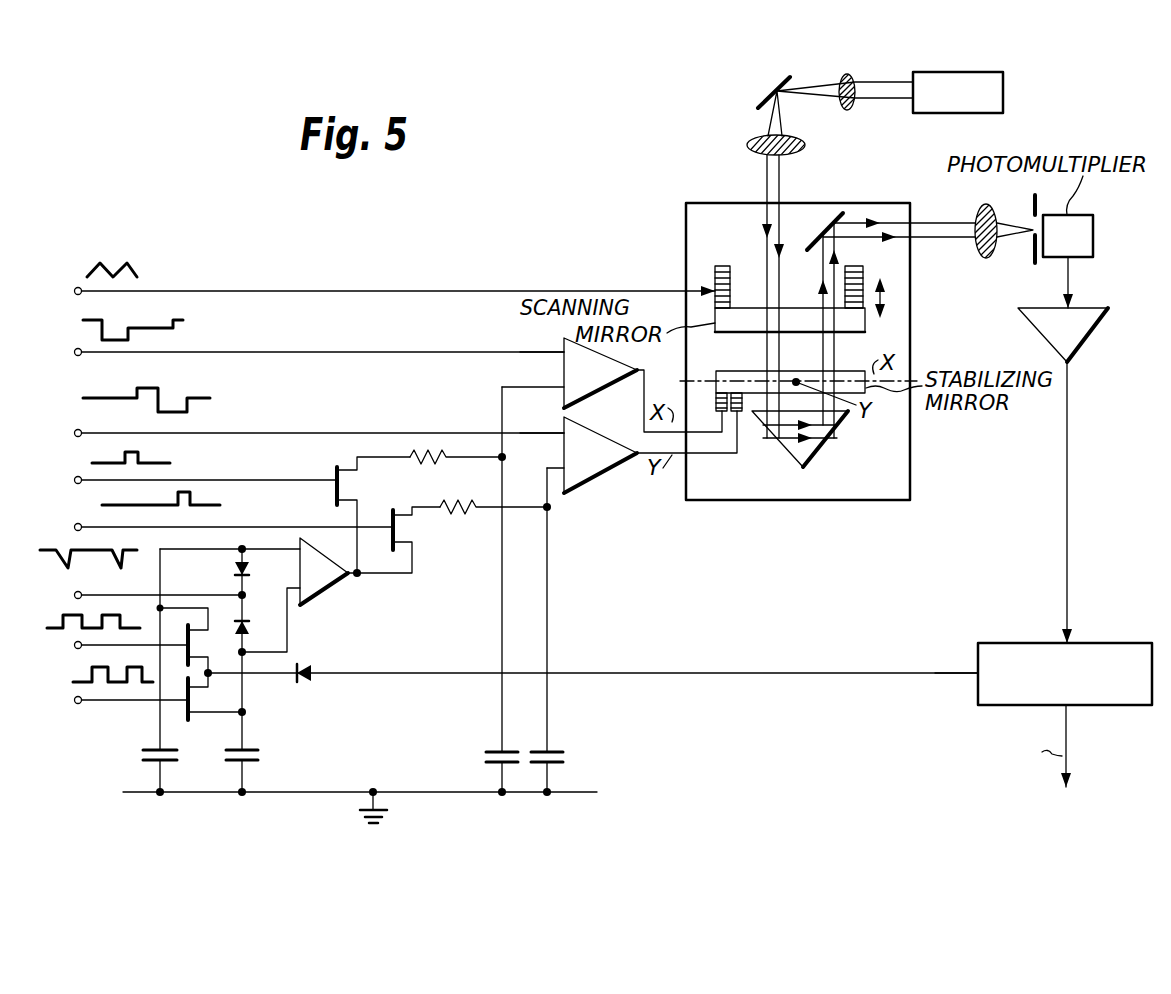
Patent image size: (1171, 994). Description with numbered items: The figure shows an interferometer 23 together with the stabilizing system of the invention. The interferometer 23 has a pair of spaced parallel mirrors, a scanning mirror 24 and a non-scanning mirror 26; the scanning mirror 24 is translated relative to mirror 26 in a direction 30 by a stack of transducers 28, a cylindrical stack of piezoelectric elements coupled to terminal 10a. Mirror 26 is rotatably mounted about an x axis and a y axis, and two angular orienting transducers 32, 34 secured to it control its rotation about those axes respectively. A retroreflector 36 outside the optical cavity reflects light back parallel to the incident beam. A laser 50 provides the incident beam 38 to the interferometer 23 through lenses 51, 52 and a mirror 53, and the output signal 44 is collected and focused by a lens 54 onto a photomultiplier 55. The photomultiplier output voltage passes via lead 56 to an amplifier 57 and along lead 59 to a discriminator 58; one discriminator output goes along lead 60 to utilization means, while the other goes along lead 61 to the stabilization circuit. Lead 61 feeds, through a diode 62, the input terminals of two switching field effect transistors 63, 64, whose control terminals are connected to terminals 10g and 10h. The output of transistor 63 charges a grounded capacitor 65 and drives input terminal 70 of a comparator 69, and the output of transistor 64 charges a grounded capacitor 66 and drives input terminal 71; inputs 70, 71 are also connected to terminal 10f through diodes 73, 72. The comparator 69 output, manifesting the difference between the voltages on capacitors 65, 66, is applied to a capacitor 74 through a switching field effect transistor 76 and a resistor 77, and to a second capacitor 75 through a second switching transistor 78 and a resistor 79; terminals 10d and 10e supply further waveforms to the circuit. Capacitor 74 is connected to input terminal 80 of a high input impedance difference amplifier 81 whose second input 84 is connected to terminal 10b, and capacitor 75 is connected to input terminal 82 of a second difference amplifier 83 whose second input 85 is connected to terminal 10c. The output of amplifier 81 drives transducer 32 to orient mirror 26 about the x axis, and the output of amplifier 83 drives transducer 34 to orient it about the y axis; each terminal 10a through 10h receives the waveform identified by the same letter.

The terminal 10a is at (74, 291).
The terminal 10b is at (74, 352).
The terminal 10c is at (74, 433).
The terminal 10d is at (74, 480).
The terminal 10e is at (74, 527).
The terminal 10f is at (74, 595).
The terminal 10g is at (74, 645).
The terminal 10h is at (74, 700).
The interferometer 23 is at (887, 500).
The scanning mirror 24 is at (860, 331).
The non-scanning mirror 26 is at (743, 371).
The stack of transducers 28 is at (722, 266).
The direction 30 is at (883, 298).
The angular orienting transducer 32 is at (716, 400).
The angular orienting transducer 34 is at (739, 414).
The retroreflector 36 is at (830, 440).
The incident beam 38 is at (788, 185).
The output signal 44 is at (930, 221).
The laser 50 is at (968, 72).
The lens 51 is at (850, 75).
The lens 52 is at (805, 146).
The mirror 53 is at (779, 77).
The lens 54 is at (982, 250).
The photomultiplier 55 is at (1093, 232).
The lead 56 is at (1070, 280).
The amplifier 57 is at (1090, 333).
The discriminator 58 is at (1088, 643).
The lead 59 is at (1068, 522).
The lead 60 is at (1068, 758).
The output lead 61 is at (937, 674).
The diode 62 is at (300, 680).
The switching field effect transistor 63 is at (200, 644).
The switching field effect transistor 64 is at (196, 697).
The capacitor 65 is at (143, 757).
The capacitor 66 is at (258, 757).
The comparator 69 is at (332, 587).
The input terminal 70 is at (268, 548).
The input terminal 71 is at (287, 623).
The diode 72 is at (264, 612).
The diode 73 is at (249, 569).
The capacitor 74 is at (486, 758).
The second capacitor 75 is at (563, 759).
The switching field effect transistor 76 is at (363, 483).
The resistor 77 is at (437, 466).
The second switching field effect transistor 78 is at (408, 531).
The resistor 79 is at (446, 500).
The input terminal 80 is at (541, 387).
The high input impedance difference amplifier 81 is at (595, 388).
The input terminal 82 is at (553, 470).
The second high input impedance difference amplifier 83 is at (597, 465).
The second input 84 is at (530, 353).
The second input 85 is at (541, 432).